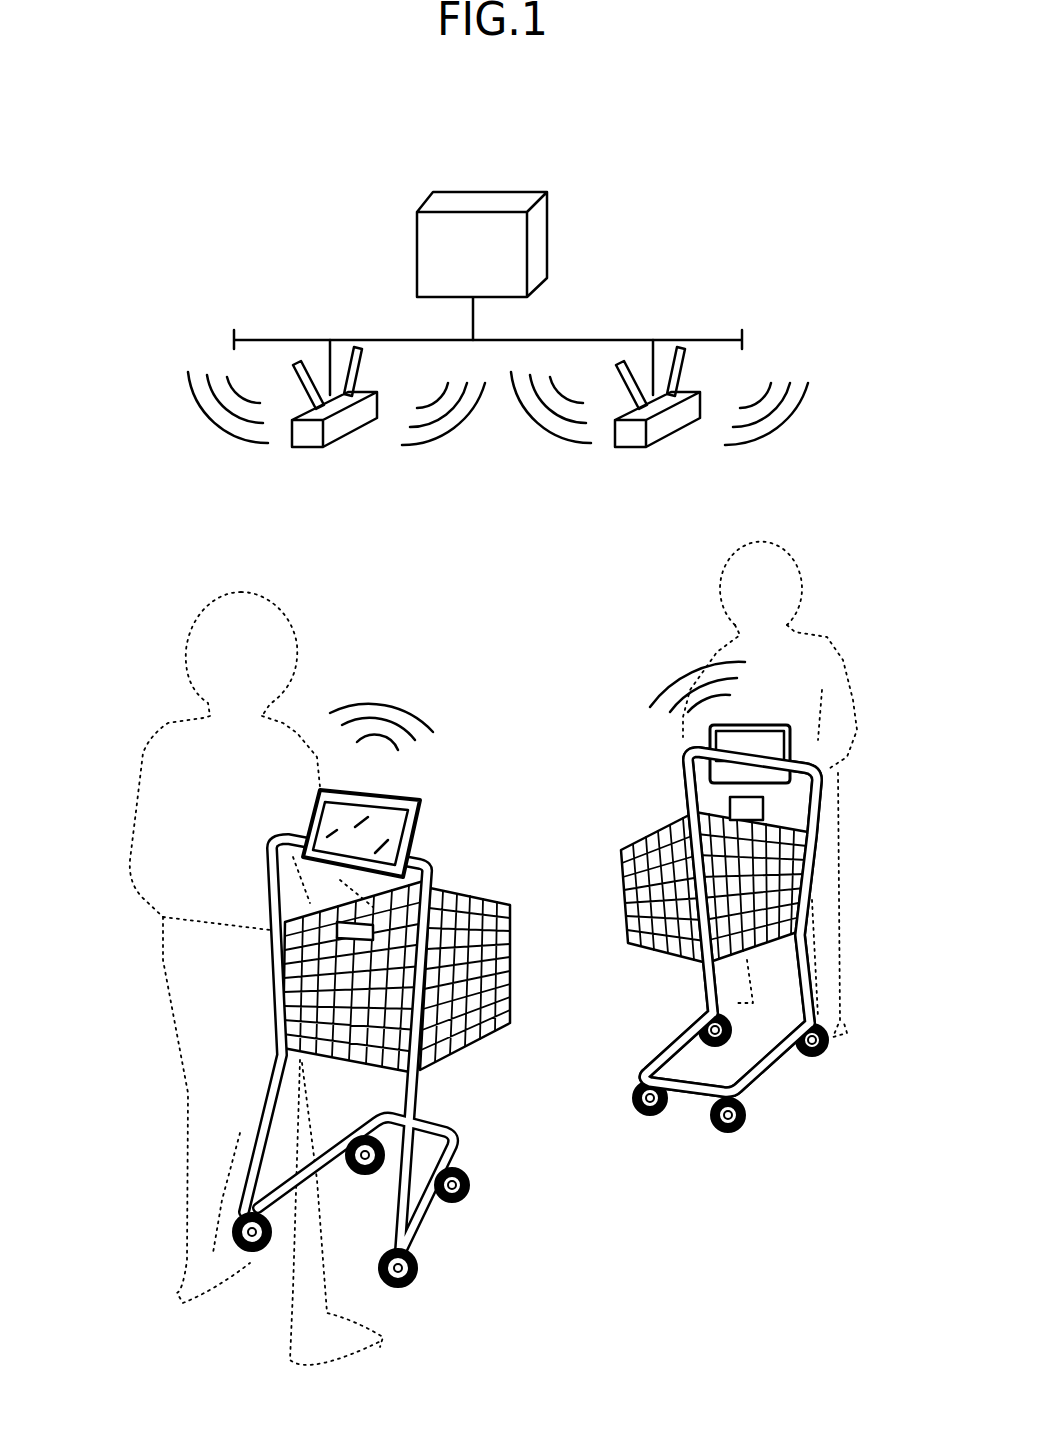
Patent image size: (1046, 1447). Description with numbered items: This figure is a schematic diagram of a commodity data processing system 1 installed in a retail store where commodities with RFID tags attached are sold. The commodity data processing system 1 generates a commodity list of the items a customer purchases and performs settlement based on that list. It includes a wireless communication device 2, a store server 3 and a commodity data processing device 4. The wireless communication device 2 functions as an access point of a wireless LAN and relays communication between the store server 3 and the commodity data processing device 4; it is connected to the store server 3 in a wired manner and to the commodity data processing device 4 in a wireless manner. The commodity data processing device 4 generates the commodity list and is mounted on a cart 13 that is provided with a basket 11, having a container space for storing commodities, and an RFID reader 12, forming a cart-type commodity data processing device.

The commodity data processing system 1 is at (706, 209).
The wireless communication device 2 is at (307, 447).
The store server 3 is at (538, 240).
The commodity data processing device 4 is at (388, 790).
The basket 11 is at (482, 895).
The RFID reader 12 is at (170, 910).
The cart 13 is at (448, 810).